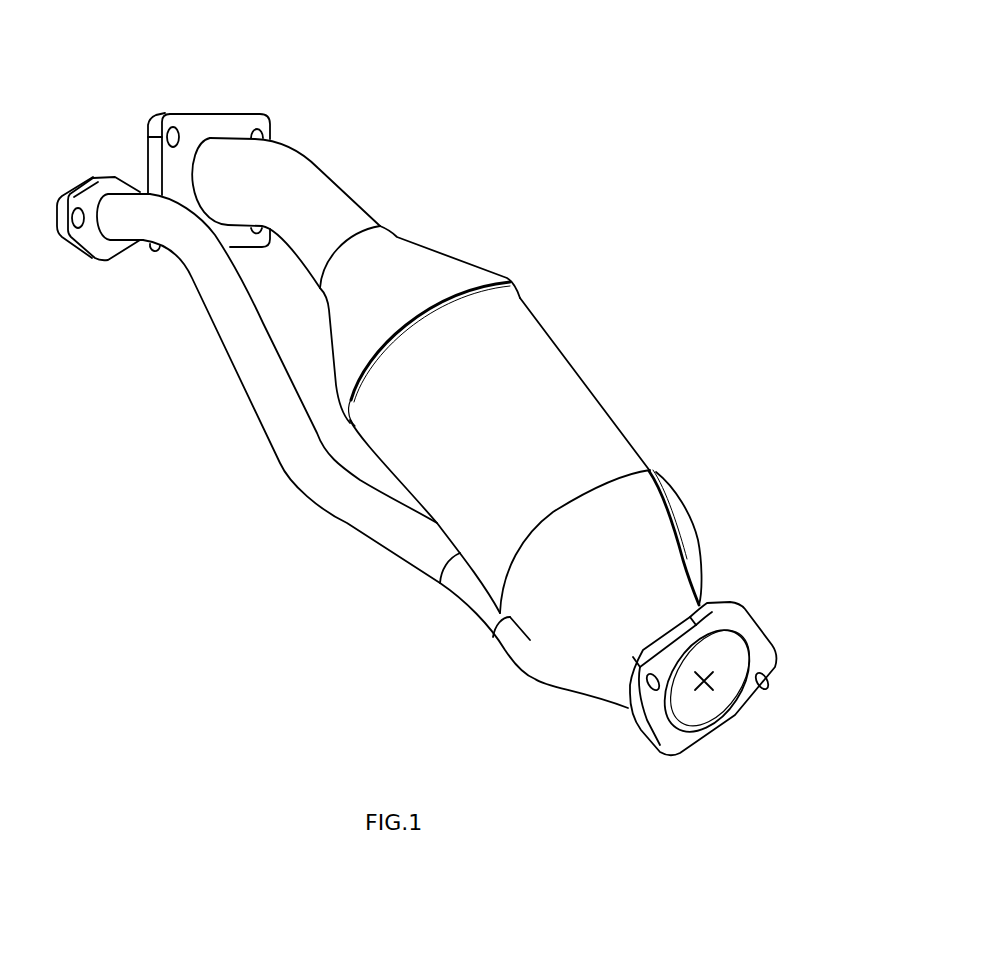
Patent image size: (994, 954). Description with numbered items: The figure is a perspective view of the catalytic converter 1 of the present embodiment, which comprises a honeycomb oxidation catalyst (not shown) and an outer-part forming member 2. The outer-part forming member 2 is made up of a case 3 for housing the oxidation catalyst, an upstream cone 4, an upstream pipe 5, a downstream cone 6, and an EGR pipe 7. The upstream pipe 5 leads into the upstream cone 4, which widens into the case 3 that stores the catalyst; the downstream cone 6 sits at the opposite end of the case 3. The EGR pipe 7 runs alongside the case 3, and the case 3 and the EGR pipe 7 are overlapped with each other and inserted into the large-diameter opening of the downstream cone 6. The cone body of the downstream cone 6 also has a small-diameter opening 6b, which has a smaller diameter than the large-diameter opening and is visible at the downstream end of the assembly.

The catalytic converter 1 is at (442, 379).
The outer-part forming member 2 is at (574, 491).
The case 3 is at (560, 353).
The upstream cone 4 is at (450, 253).
The upstream pipe 5 is at (311, 152).
The downstream cone 6 is at (698, 537).
The small-diameter opening 6b is at (710, 682).
The EGR pipe 7 is at (256, 411).